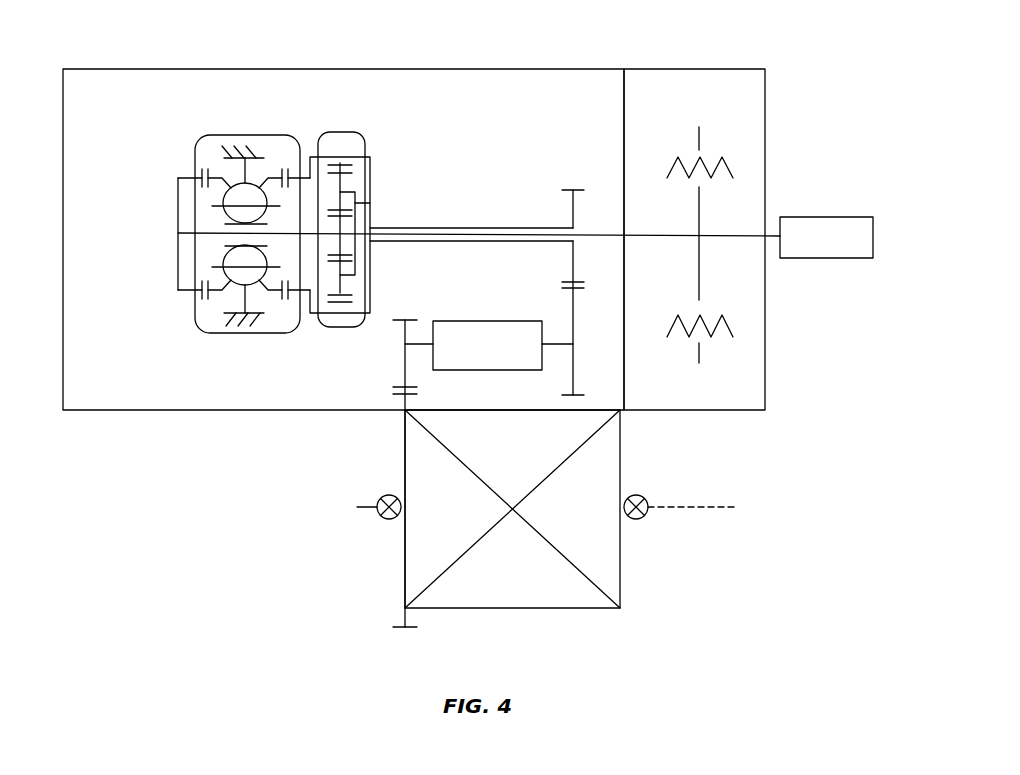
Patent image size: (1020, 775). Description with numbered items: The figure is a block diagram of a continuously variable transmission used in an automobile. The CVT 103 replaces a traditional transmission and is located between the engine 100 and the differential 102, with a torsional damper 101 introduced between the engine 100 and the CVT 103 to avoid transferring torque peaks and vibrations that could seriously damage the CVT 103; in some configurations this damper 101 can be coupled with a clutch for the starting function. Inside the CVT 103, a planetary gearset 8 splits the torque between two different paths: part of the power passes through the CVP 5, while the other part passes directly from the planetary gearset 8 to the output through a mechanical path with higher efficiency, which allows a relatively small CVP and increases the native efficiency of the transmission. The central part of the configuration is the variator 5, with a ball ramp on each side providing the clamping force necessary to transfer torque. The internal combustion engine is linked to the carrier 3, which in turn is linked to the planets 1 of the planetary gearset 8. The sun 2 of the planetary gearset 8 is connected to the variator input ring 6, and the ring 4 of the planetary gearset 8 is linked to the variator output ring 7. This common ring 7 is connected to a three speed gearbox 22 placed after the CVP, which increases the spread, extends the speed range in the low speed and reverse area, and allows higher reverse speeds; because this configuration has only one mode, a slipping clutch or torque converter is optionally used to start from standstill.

The planets 1 is at (370, 278).
The sun 2 is at (348, 226).
The carrier 3 is at (370, 201).
The ring 4 is at (353, 163).
The CVP 5 is at (193, 137).
The variator input ring 6 is at (216, 301).
The variator output ring 7 is at (272, 300).
The planetary gearset 8 is at (340, 126).
The three speed gearbox 22 is at (498, 355).
The engine 100 is at (856, 213).
The torsional damper 101 is at (713, 66).
The differential 102 is at (474, 620).
The CVT 103 is at (390, 66).